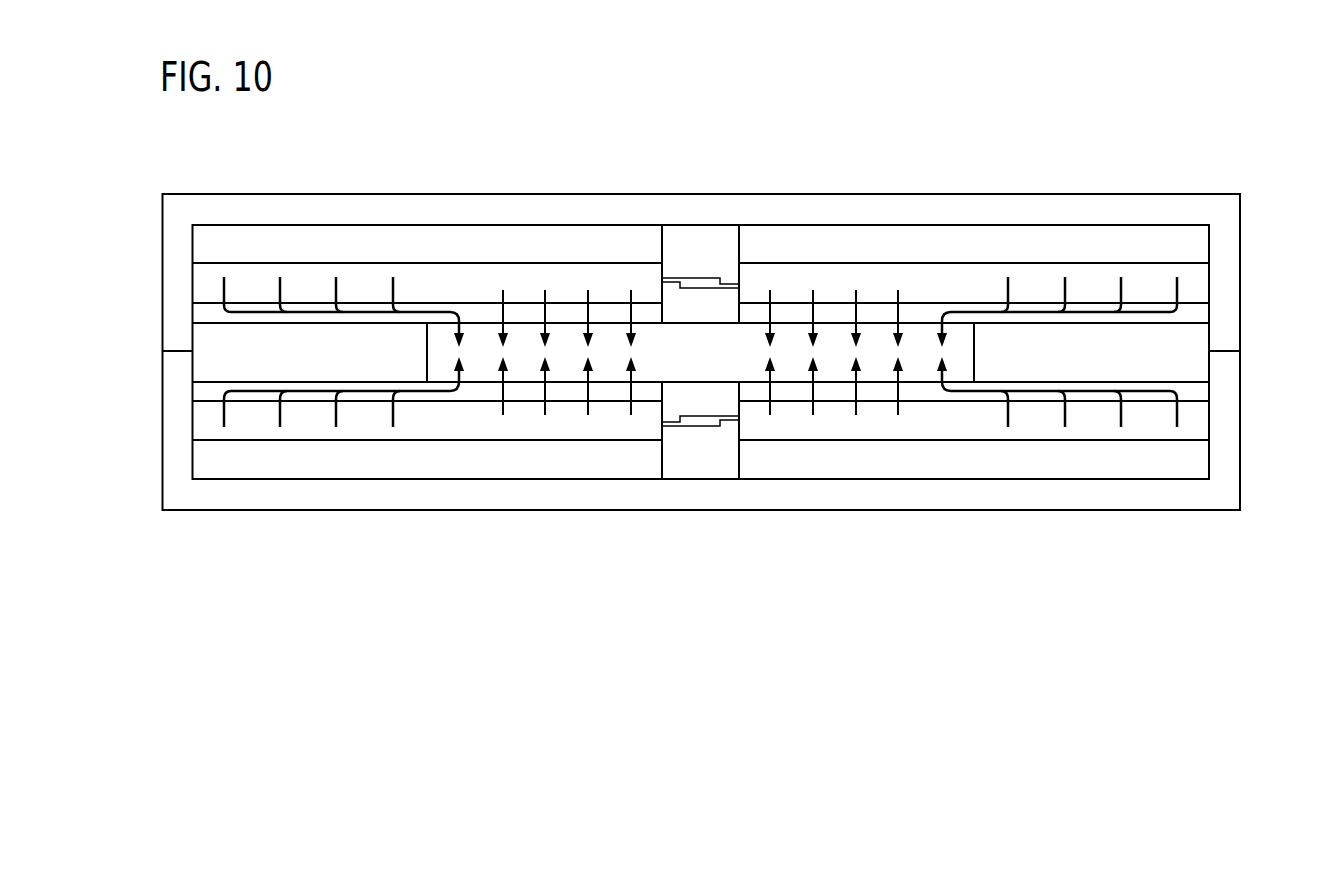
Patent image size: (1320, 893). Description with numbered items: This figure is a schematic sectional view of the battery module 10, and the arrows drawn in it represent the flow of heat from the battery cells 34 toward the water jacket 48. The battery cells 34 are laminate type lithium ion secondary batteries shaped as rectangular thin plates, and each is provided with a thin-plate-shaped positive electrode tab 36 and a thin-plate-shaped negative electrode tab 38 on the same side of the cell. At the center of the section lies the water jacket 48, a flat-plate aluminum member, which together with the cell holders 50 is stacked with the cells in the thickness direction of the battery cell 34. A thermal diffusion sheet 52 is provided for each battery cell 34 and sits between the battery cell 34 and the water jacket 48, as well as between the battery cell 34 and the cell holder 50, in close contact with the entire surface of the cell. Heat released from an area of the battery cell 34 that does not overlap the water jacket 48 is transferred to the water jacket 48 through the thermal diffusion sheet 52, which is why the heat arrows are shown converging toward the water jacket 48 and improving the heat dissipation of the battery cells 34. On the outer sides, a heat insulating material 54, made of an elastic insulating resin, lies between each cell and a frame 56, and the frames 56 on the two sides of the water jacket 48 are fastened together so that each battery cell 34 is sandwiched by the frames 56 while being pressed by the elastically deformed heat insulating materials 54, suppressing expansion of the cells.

The battery module 10 is at (684, 117).
The battery cell 34 is at (439, 290).
The positive electrode tab 36 is at (684, 278).
The negative electrode tab 38 is at (730, 283).
The water jacket 48 is at (797, 363).
The cell holder 50 is at (212, 342).
The thermal diffusion sheet 52 is at (202, 312).
The heat insulating material 54 is at (555, 250).
The frame 56 is at (860, 214).